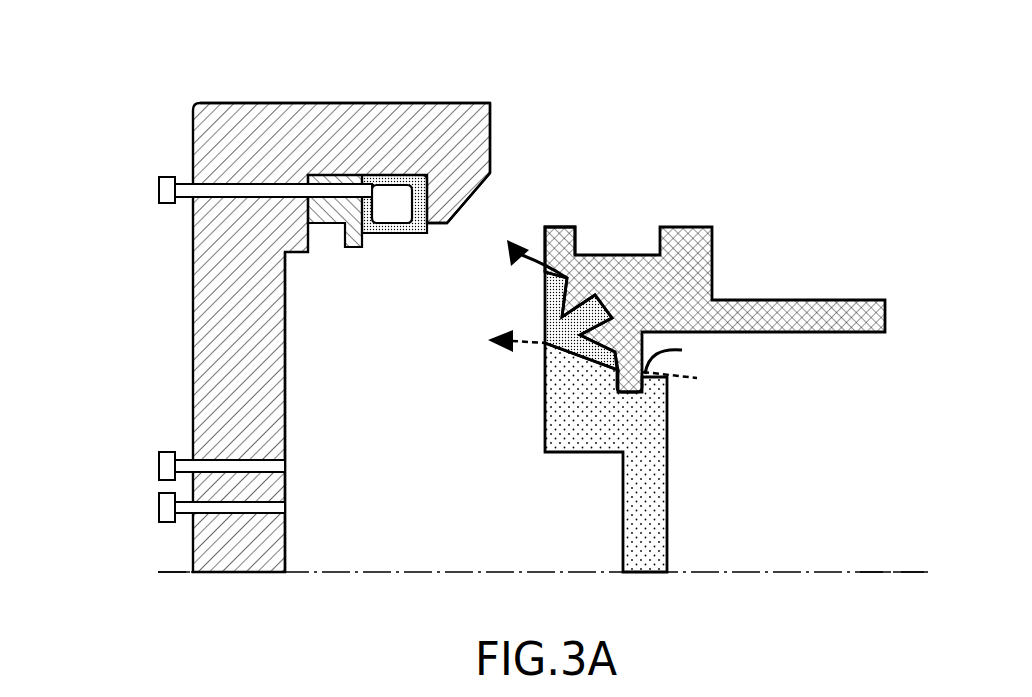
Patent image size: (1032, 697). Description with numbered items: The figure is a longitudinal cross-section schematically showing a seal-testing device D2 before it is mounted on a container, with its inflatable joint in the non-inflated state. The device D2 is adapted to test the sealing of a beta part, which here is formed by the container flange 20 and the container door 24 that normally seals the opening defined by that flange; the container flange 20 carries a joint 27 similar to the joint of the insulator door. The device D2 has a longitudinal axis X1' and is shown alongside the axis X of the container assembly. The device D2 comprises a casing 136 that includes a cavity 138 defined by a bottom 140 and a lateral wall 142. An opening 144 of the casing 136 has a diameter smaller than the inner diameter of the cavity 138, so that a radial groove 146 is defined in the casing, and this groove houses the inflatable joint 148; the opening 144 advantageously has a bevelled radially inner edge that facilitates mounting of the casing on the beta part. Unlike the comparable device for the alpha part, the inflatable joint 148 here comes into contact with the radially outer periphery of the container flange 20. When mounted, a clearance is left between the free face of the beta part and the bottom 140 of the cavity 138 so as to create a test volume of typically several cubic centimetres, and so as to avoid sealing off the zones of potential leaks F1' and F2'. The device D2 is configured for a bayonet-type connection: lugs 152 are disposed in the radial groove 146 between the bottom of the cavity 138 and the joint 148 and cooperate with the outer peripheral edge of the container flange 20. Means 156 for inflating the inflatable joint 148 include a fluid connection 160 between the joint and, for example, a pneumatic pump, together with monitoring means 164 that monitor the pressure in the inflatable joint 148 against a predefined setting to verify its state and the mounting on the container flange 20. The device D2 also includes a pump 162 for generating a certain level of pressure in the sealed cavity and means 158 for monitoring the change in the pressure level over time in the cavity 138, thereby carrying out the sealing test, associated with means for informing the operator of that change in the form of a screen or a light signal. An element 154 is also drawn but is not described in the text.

The container flange 20 is at (660, 196).
The container door 24 is at (640, 458).
The joint 27 is at (590, 308).
The casing 136 is at (419, 96).
The cavity 138 is at (302, 522).
The bottom 140 is at (202, 357).
The lateral wall 142 is at (328, 115).
The opening 144 is at (447, 238).
The radial groove 146 is at (415, 195).
The inflatable joint 148 is at (393, 248).
The lugs 152 is at (557, 227).
The insert 154 is at (310, 237).
The means for inflating the inflatable joint 156 is at (158, 195).
The means for monitoring the change in the pressure level 158 is at (158, 512).
The fluid connection 160 is at (222, 190).
The pump 162 is at (158, 458).
The monitoring means 164 is at (197, 197).
The seal-testing device D2 is at (226, 63).
The zone of potential leak F1' is at (587, 377).
The zone of potential leak F2' is at (502, 308).
The axis X is at (903, 573).
The longitudinal axis X1' is at (186, 603).